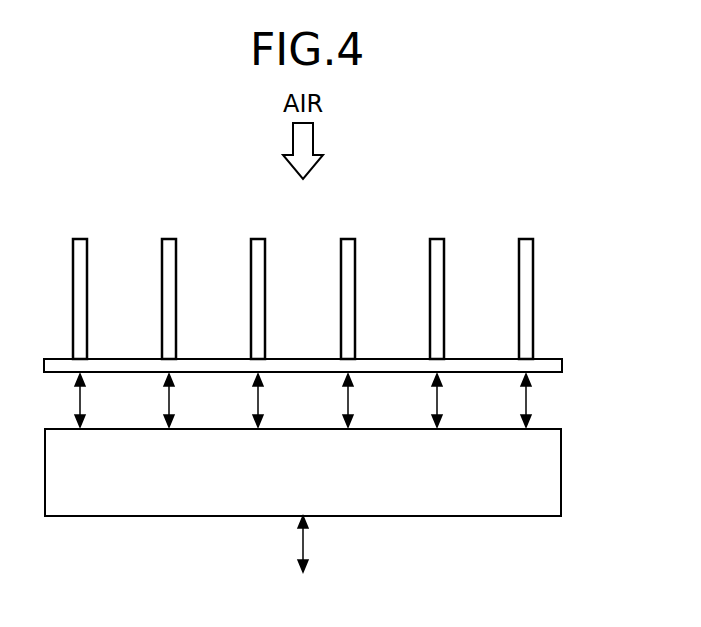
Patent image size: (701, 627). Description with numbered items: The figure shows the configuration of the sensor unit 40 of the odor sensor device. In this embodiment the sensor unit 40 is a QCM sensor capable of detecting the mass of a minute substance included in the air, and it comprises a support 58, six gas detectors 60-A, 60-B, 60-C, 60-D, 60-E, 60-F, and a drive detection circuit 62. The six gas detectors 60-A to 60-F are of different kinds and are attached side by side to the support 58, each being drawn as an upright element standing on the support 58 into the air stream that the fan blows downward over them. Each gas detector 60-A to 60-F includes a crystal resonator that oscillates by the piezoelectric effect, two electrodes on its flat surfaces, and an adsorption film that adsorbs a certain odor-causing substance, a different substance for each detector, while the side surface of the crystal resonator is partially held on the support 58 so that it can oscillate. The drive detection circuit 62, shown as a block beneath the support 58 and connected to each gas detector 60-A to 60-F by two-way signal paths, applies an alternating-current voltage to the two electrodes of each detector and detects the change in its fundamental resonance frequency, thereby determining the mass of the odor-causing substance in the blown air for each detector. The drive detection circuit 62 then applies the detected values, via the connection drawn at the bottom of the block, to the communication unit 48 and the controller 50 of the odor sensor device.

The sensor unit 40 is at (166, 149).
The support 58 is at (562, 362).
The gas detector 60-A is at (80, 239).
The gas detector 60-B is at (169, 239).
The gas detector 60-C is at (258, 239).
The gas detector 60-D is at (348, 239).
The gas detector 60-E is at (437, 239).
The gas detector 60-F is at (526, 239).
The drive detection circuit 62 is at (561, 470).
The communication unit 48 is at (305, 560).
The controller 50 is at (303, 544).